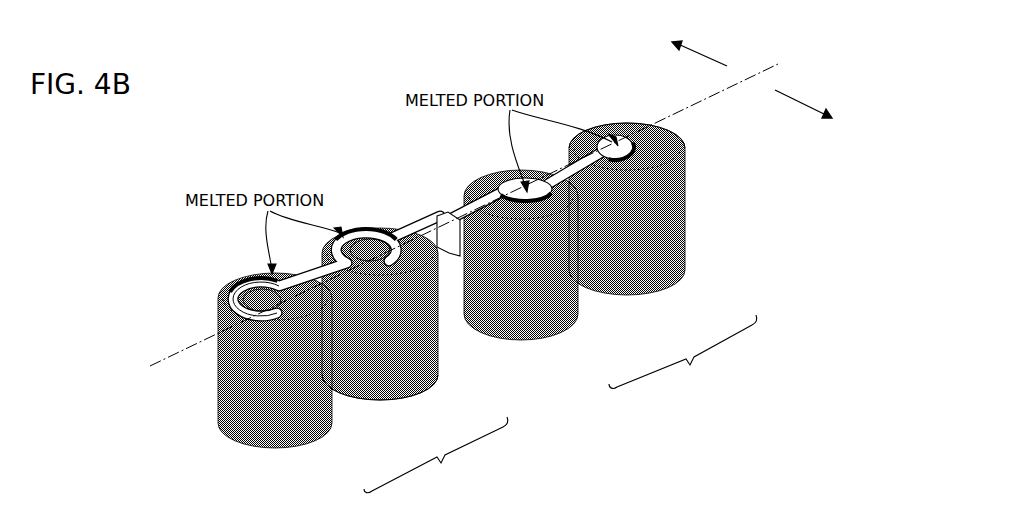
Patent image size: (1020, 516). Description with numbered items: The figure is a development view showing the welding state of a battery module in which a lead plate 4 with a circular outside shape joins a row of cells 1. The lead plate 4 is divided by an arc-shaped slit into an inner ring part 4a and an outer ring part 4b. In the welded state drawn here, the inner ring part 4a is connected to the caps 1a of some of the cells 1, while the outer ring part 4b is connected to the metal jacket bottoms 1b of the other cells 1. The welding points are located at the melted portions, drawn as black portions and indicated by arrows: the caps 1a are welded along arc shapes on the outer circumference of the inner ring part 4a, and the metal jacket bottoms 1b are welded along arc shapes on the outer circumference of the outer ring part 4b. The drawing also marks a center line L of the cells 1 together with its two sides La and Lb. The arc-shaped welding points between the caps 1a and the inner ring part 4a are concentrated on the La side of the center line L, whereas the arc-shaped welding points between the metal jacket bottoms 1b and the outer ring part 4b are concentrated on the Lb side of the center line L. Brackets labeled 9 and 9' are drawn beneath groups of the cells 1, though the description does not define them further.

The cell 1 is at (675, 286).
The cap 1a is at (685, 167).
The metal jacket bottom 1b is at (400, 398).
The lead plate 4 is at (448, 250).
The inner ring part 4a is at (607, 172).
The outer ring part 4b is at (305, 292).
The battery block 9 is at (683, 351).
The battery block 9' is at (436, 455).
The center line L is at (501, 192).
The La side La is at (819, 114).
The Lb side Lb is at (687, 41).